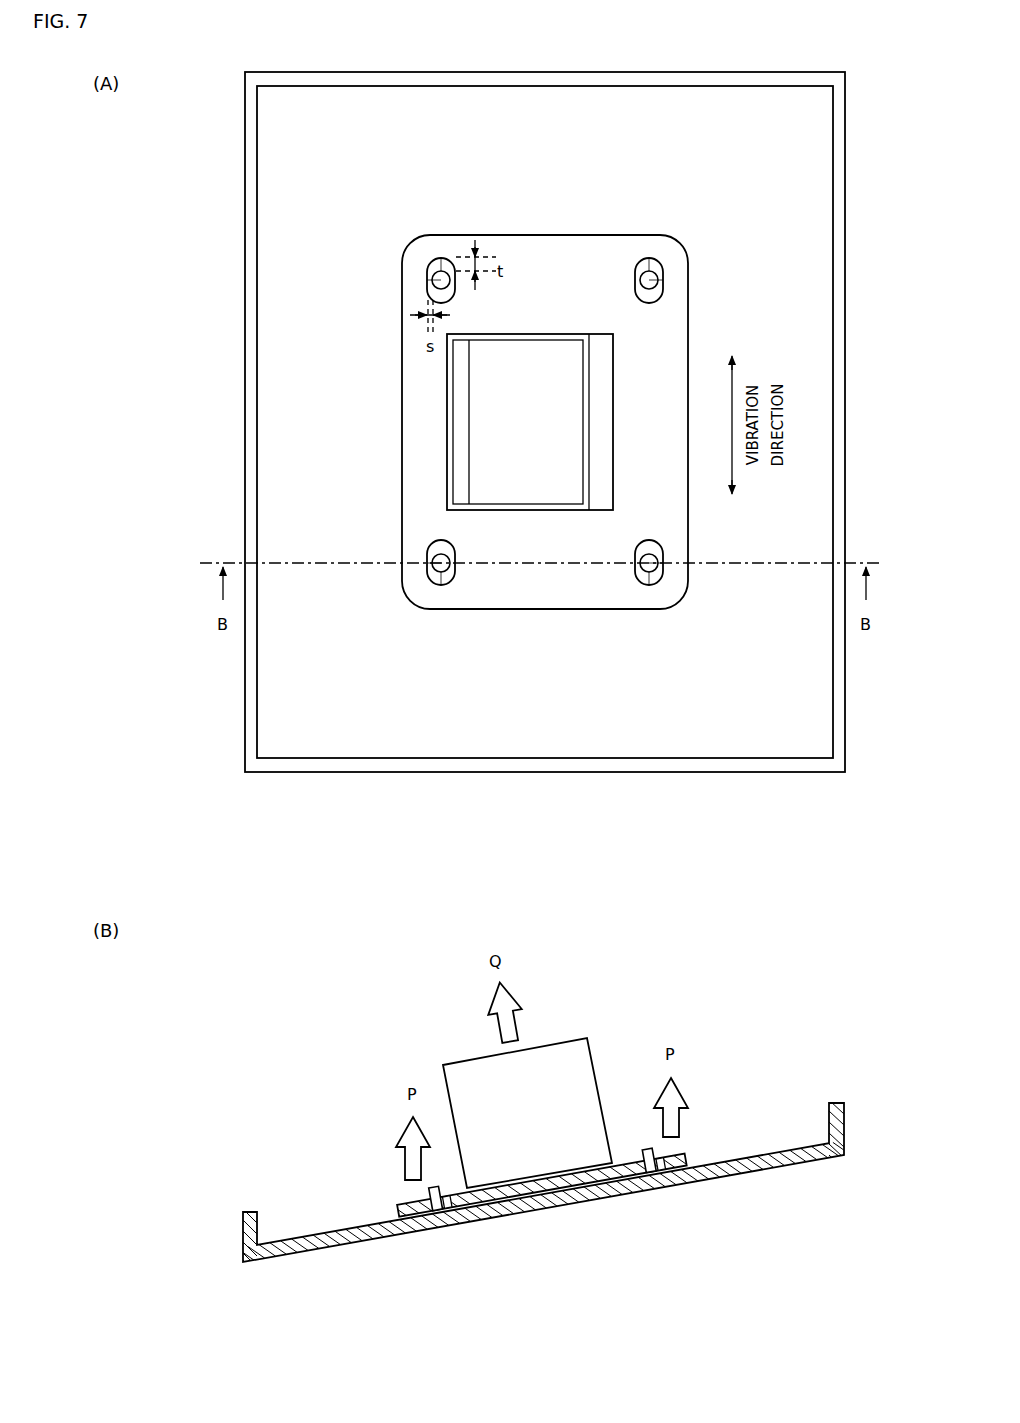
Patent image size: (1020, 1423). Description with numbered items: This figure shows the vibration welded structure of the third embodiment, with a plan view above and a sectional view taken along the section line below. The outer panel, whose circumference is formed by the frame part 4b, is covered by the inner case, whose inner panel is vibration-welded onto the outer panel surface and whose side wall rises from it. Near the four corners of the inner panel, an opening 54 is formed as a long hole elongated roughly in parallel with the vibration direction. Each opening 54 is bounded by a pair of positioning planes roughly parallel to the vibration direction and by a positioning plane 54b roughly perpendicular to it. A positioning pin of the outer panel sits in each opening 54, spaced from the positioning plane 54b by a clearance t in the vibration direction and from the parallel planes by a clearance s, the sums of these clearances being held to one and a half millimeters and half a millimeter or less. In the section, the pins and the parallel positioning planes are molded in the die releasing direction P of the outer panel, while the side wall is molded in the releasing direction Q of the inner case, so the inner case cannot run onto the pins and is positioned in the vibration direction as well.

The frame part 4b is at (244, 192).
The opening 54 is at (460, 292).
The positioning plane 54b is at (438, 262).